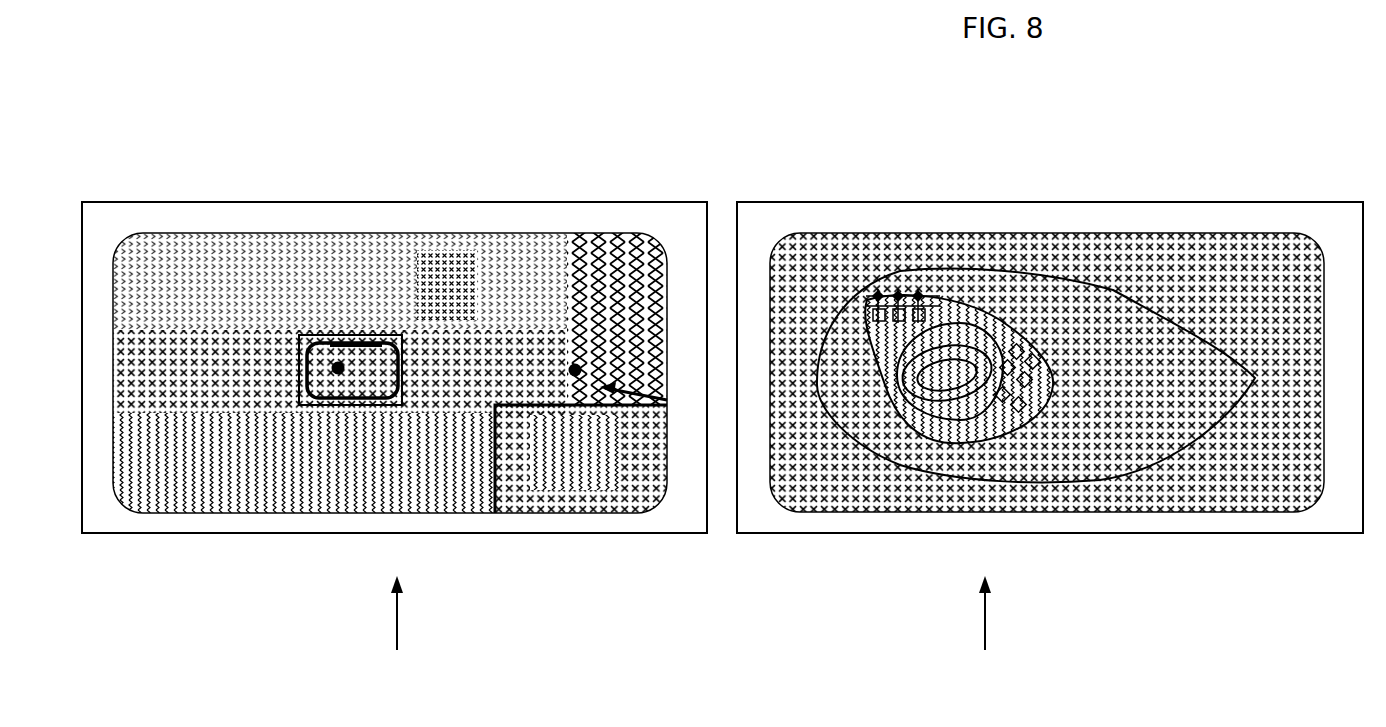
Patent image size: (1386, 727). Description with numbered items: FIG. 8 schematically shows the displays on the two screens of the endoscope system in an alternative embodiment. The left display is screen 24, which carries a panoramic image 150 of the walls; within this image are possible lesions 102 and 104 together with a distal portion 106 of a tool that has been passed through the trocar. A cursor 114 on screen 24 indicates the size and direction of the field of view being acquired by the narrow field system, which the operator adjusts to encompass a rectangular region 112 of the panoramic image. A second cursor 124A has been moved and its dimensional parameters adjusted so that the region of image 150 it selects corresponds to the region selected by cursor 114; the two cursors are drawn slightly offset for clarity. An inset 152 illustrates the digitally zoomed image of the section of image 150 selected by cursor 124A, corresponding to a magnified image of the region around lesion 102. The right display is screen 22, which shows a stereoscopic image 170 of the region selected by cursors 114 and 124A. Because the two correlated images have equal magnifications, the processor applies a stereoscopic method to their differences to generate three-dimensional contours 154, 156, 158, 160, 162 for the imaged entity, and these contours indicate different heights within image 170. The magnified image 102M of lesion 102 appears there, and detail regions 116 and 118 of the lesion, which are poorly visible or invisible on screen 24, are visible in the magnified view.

The screen 22 is at (782, 535).
The screen 24 is at (127, 535).
The lesion 102 is at (338, 368).
The magnified image of lesion 102M is at (943, 443).
The lesion 104 is at (575, 370).
The distal portion of a tool 106 is at (603, 385).
The rectangular region 112 is at (345, 343).
The cursor 114 is at (365, 405).
The region of lesion 116 is at (1015, 395).
The region of lesion 118 is at (905, 303).
The second cursor 124A is at (396, 405).
The panoramic image 150 is at (397, 637).
The inset 152 is at (588, 513).
The contour 154 is at (953, 357).
The contour 156 is at (982, 347).
The contour 158 is at (997, 323).
The contour 160 is at (1028, 330).
The contour 162 is at (1112, 292).
The stereoscopic image 170 is at (987, 637).